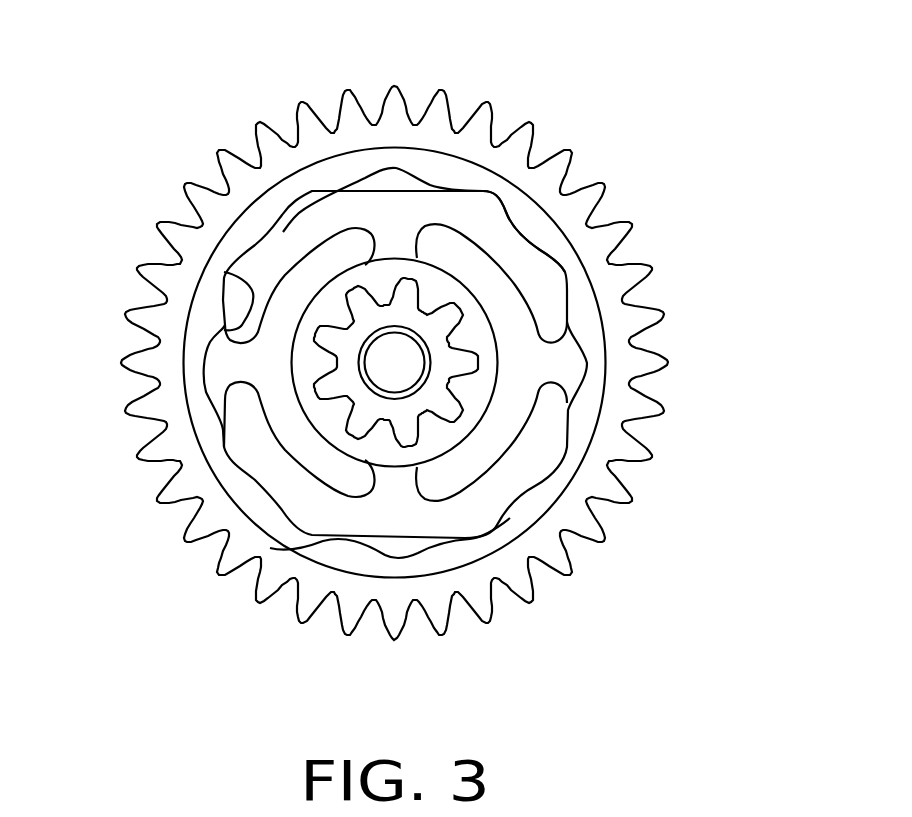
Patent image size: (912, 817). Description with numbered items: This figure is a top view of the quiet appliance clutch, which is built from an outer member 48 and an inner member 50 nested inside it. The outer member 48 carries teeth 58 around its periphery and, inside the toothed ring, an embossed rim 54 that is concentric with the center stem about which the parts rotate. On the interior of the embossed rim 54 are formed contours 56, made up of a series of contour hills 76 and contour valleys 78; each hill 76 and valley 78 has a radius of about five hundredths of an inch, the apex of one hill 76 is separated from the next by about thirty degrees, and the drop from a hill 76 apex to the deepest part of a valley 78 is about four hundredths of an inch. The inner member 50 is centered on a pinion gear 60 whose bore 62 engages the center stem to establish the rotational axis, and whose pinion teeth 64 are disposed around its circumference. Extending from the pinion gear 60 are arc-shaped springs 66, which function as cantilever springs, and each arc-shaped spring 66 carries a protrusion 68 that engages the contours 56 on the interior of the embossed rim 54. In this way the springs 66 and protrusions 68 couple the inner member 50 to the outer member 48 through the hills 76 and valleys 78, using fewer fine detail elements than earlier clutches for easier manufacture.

The outer member 48 is at (540, 230).
The inner member 50 is at (393, 230).
The embossed rim 54 is at (582, 415).
The contours 56 is at (500, 540).
The teeth 58 is at (537, 608).
The pinion gear 60 is at (410, 427).
The bore 62 is at (370, 397).
The pinion teeth 64 is at (317, 393).
The arc-shaped springs 66 is at (290, 238).
The protrusion 68 is at (237, 325).
The contour hill 76 is at (440, 185).
The contour valley 78 is at (497, 197).